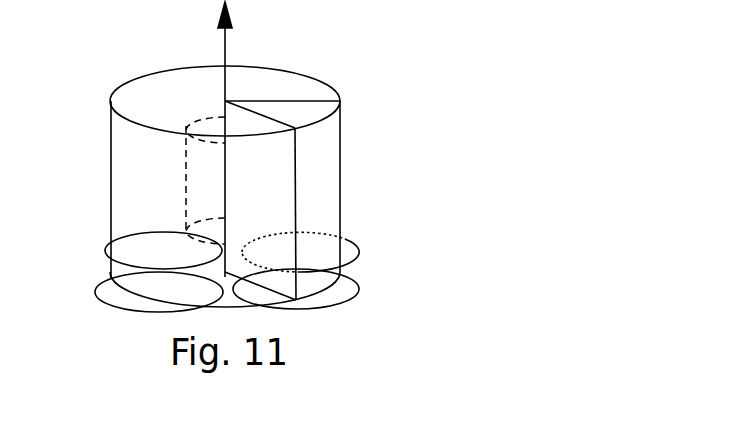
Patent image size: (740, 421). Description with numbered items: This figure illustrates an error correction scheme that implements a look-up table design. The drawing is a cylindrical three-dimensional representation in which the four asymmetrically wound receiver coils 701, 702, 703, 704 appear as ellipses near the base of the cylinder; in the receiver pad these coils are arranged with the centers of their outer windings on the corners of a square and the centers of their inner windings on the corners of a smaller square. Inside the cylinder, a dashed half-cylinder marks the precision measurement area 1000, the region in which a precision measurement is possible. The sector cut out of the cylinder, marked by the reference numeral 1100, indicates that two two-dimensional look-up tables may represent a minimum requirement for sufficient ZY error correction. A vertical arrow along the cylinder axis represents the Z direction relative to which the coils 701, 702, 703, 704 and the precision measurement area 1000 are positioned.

The two 2D look-up tables 1100 is at (270, 128).
The precision measurement area 1000 is at (198, 181).
The receiver coil 701 is at (121, 249).
The receiver coil 702 is at (113, 298).
The receiver coil 703 is at (338, 293).
The receiver coil 704 is at (348, 247).